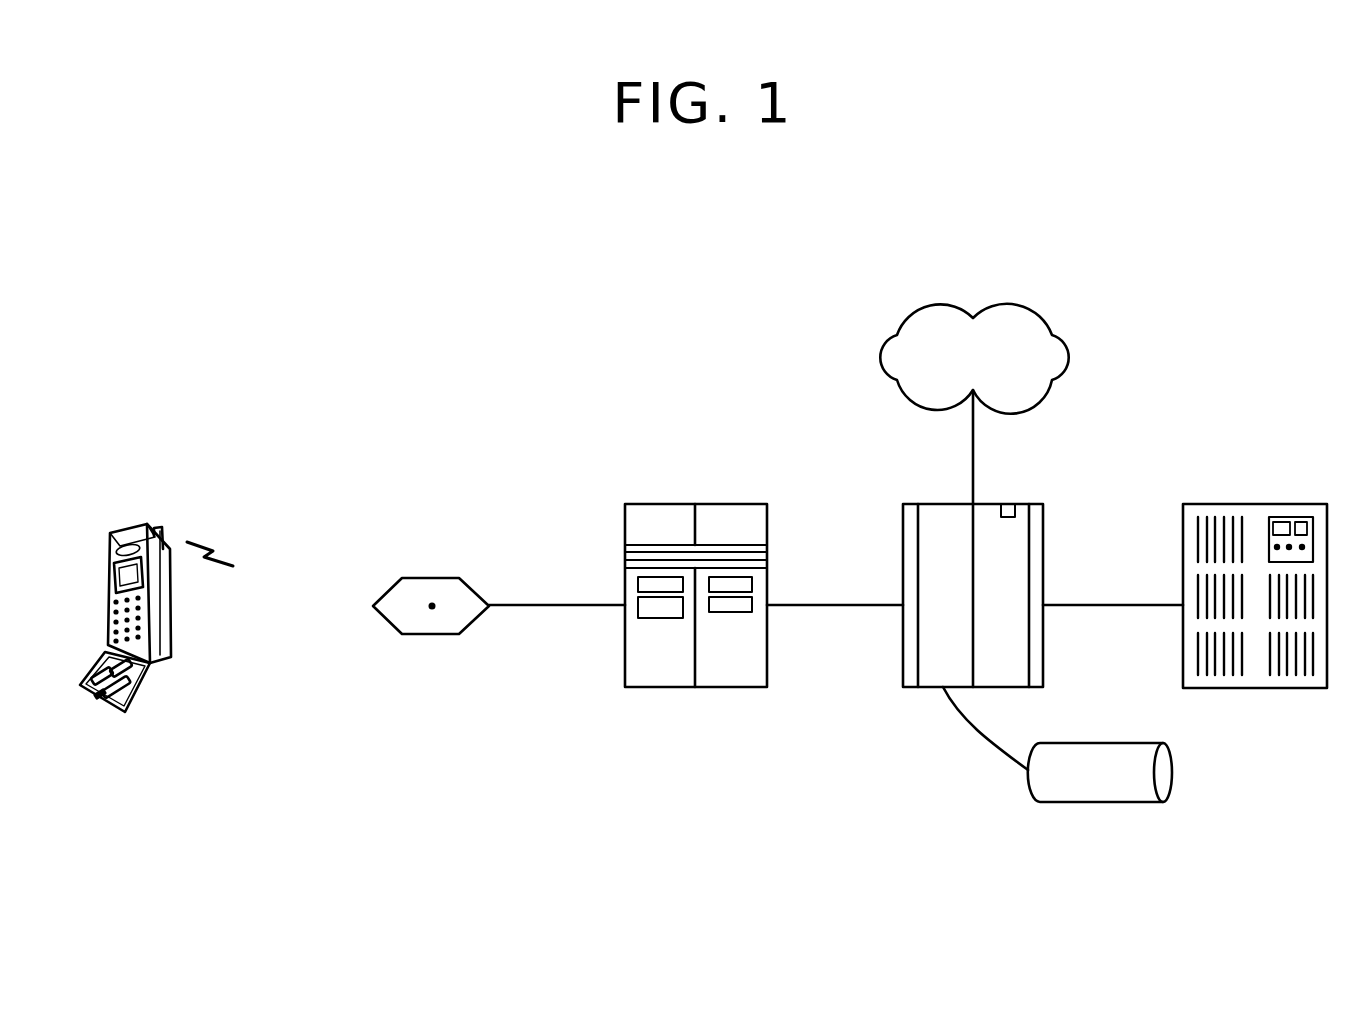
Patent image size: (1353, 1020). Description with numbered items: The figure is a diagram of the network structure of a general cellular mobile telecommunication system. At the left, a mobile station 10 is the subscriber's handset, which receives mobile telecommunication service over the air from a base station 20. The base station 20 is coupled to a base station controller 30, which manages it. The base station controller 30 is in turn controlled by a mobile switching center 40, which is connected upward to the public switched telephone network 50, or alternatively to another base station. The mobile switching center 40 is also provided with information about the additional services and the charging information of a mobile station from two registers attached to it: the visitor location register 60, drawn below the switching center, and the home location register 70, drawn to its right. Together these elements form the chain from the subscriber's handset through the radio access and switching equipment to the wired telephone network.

The mobile station 10 is at (143, 695).
The base station 20 is at (431, 578).
The base station controller 30 is at (722, 503).
The mobile switching center 40 is at (1022, 503).
The public switched telephone network 50 is at (1030, 310).
The visitor location register 60 is at (1174, 772).
The home location register 70 is at (1253, 503).